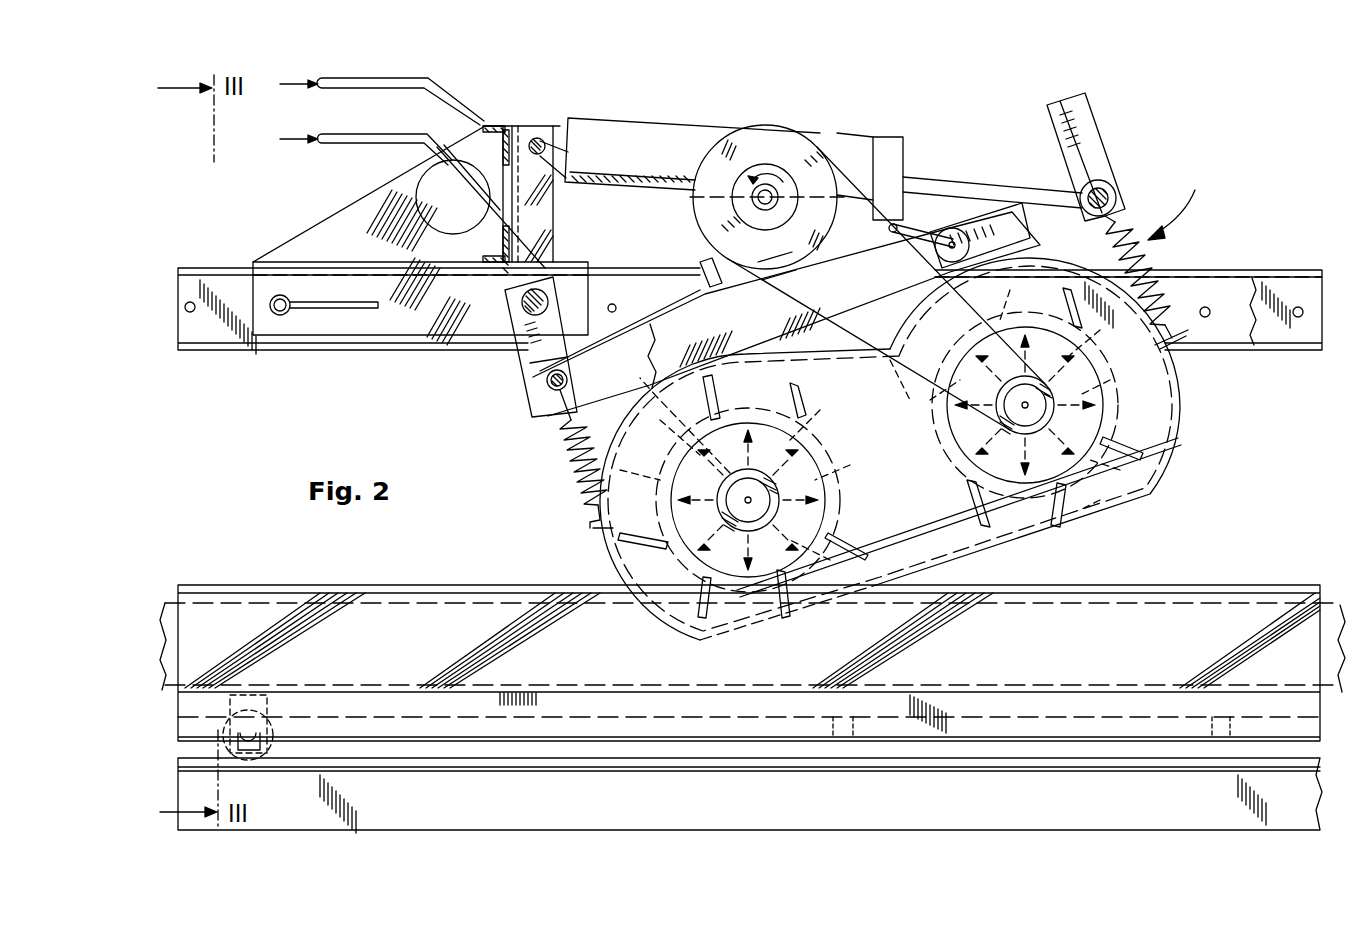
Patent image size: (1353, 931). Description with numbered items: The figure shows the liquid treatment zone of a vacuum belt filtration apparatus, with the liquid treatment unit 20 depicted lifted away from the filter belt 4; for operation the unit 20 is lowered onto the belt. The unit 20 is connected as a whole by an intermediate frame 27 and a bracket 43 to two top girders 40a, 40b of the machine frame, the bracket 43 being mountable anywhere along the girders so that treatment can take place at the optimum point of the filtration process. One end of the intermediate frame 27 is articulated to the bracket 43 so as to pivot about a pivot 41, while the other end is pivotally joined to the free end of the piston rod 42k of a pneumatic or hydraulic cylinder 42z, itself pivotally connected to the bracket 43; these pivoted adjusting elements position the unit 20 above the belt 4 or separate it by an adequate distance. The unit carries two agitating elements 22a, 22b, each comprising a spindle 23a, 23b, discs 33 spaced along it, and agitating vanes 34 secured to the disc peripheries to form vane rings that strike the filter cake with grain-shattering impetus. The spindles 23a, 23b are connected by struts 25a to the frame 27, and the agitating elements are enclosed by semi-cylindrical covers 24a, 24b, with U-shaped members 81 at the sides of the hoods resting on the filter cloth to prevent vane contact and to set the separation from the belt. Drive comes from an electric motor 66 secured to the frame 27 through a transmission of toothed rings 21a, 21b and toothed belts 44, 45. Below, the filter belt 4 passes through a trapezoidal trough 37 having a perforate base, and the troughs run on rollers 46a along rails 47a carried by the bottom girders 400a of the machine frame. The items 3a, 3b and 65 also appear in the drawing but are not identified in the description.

The lower feed rod 3a is at (348, 128).
The upper feed rod 3b is at (367, 86).
The bracket 43 is at (337, 222).
The pneumatic or hydraulic cylinder 42z is at (685, 136).
The electric motor 66 is at (775, 128).
The link / drive belt 65 is at (895, 234).
The toothed belt 44 is at (935, 250).
The piston rod 42k is at (918, 178).
The strut 25a is at (950, 203).
The intermediate frame 27 is at (983, 210).
The liquid treatment unit 20 is at (1187, 204).
The cover 24b is at (1043, 270).
The cover 24a is at (606, 455).
The top girder 40a is at (212, 348).
The top girder 40b is at (1270, 348).
The pivot 41 is at (522, 304).
The toothed belt 45 is at (898, 533).
The U-shaped member 81 is at (785, 622).
The toothed ring 21a is at (812, 555).
The toothed ring 21b is at (1108, 398).
The spindle 23a is at (765, 510).
The spindle 23b is at (1044, 416).
The agitating element 22a is at (840, 492).
The agitating element 22b is at (1050, 300).
The disc 33 is at (826, 436).
The agitating vane 34 is at (716, 386).
The filter belt 4 is at (172, 603).
The trapezoidal trough 37 is at (424, 592).
The roller 46a is at (268, 742).
The rail 47a is at (700, 760).
The bottom girder 400a is at (750, 795).